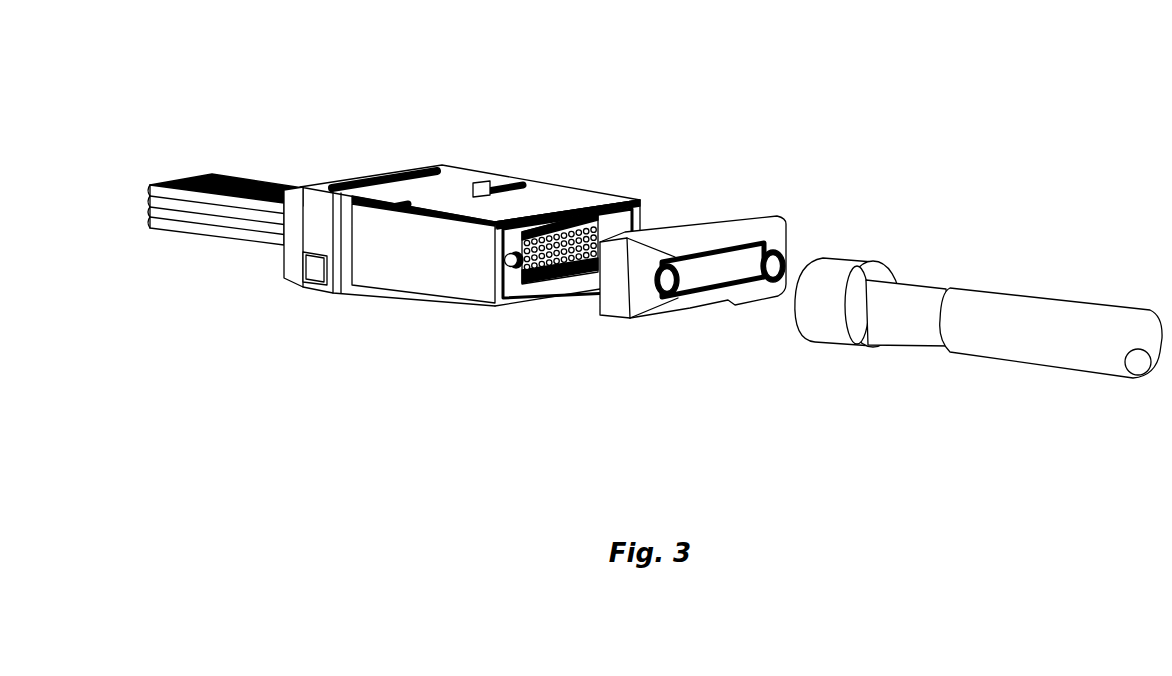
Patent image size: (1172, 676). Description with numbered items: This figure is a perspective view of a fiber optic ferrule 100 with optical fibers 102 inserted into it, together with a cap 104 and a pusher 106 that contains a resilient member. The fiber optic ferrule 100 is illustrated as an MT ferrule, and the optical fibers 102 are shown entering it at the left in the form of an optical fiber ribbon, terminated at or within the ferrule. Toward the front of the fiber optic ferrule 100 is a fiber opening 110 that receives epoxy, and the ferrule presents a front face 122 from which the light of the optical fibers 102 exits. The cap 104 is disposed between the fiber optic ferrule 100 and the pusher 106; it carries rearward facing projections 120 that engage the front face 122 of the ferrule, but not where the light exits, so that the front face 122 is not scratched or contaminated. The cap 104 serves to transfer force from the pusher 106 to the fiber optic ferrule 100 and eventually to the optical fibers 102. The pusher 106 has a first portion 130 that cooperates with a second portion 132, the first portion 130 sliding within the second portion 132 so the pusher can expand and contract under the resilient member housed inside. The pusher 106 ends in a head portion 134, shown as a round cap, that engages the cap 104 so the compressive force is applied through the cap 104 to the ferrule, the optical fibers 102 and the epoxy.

The fiber optic ferrule 100 is at (583, 118).
The optical fibers 102 is at (208, 238).
The cap 104 is at (773, 212).
The pusher 106 is at (1045, 256).
The fiber opening 110 is at (583, 193).
The rearward facing projections 120 is at (592, 311).
The front face 122 is at (524, 300).
The first portion 130 is at (914, 345).
The second portion 132 is at (1063, 370).
The head portion 134 is at (835, 346).